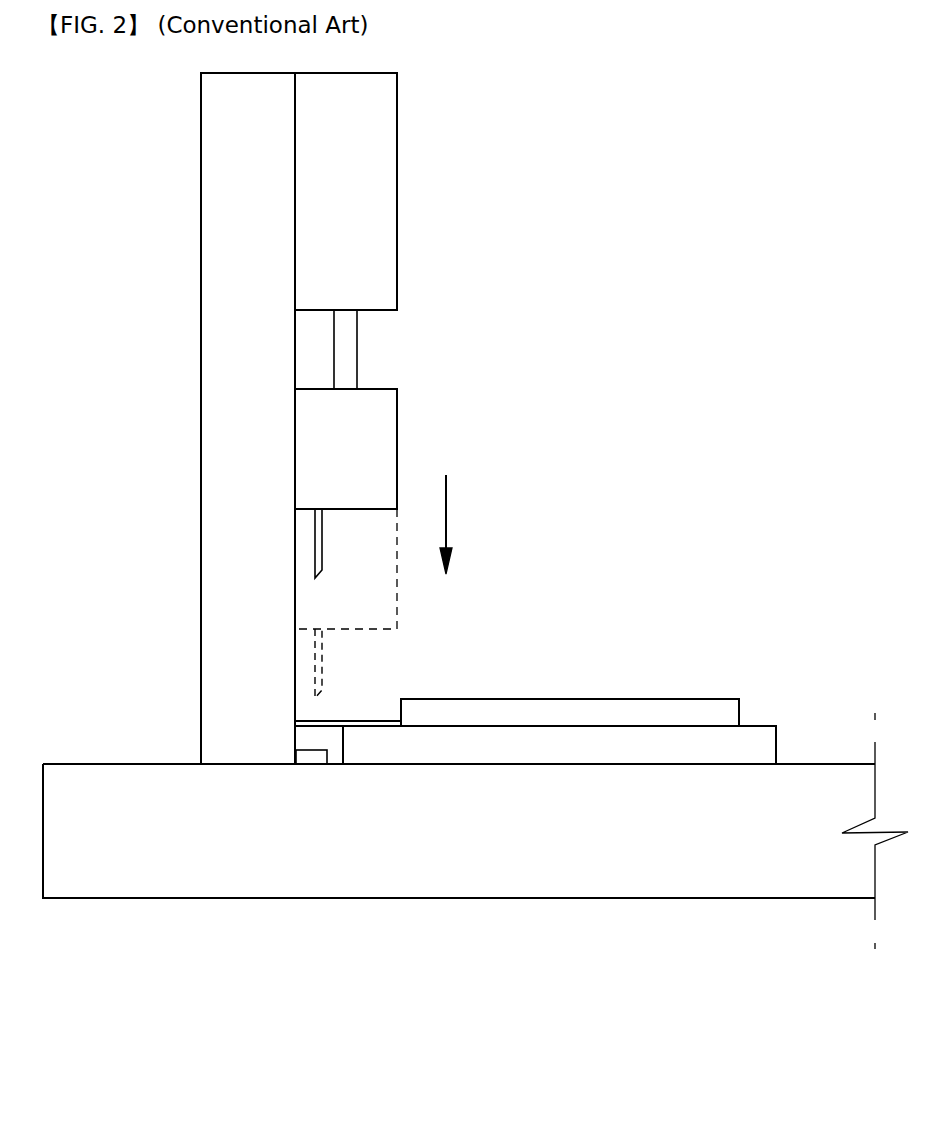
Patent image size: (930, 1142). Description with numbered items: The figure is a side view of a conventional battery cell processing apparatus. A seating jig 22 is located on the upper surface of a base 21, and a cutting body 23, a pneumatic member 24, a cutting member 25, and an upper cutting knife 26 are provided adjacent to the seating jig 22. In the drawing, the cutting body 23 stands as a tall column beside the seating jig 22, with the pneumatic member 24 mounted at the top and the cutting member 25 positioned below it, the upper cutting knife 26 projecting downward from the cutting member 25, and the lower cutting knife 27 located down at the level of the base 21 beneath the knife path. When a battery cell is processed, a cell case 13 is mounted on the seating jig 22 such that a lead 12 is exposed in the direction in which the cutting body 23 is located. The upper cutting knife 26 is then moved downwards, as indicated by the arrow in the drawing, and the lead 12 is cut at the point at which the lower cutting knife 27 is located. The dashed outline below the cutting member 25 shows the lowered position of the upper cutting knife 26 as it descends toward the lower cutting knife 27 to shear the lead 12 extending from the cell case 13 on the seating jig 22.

The lead 12 is at (344, 738).
The cell case 13 is at (638, 706).
The base 21 is at (611, 890).
The seating jig 22 is at (535, 738).
The cutting body 23 is at (208, 416).
The pneumatic member 24 is at (387, 185).
The cutting member 25 is at (387, 418).
The upper cutting knife 26 is at (318, 542).
The lower cutting knife 27 is at (312, 742).